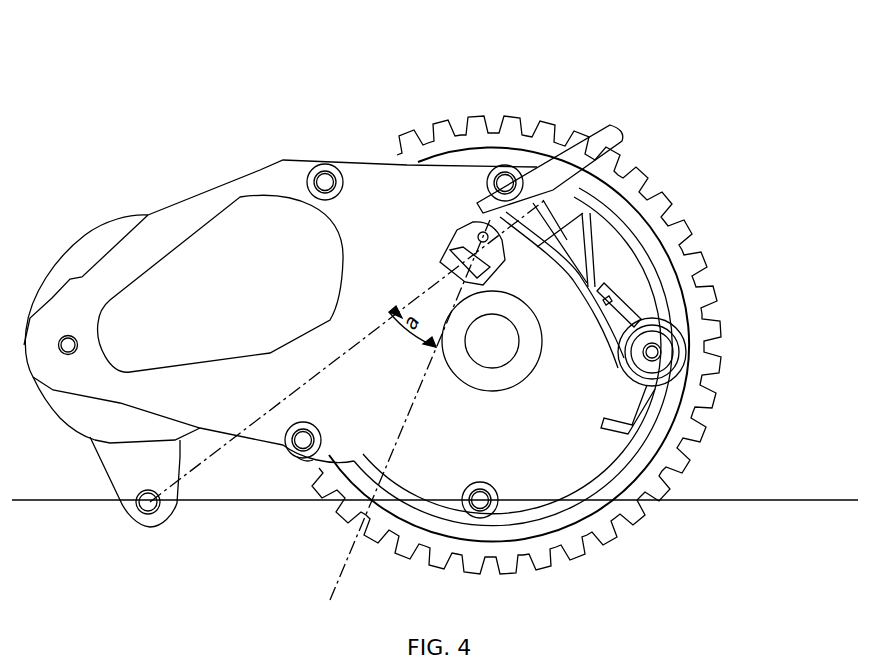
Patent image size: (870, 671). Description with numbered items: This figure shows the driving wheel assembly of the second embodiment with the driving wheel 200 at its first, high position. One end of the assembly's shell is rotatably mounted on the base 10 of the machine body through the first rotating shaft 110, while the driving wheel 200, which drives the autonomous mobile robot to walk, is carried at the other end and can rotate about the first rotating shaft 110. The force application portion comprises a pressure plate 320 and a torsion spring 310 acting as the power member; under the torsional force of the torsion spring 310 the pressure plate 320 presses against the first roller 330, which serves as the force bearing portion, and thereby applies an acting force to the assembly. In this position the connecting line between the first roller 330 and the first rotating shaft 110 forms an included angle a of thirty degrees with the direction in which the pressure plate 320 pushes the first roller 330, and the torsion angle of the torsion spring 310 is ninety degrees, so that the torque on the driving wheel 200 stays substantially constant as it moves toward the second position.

The base 10 is at (435, 530).
The first rotating shaft 110 is at (155, 508).
The driving wheel 200 is at (470, 118).
The torsion spring 310 is at (618, 305).
The pressure plate 320 is at (615, 268).
The first roller 330 is at (500, 212).